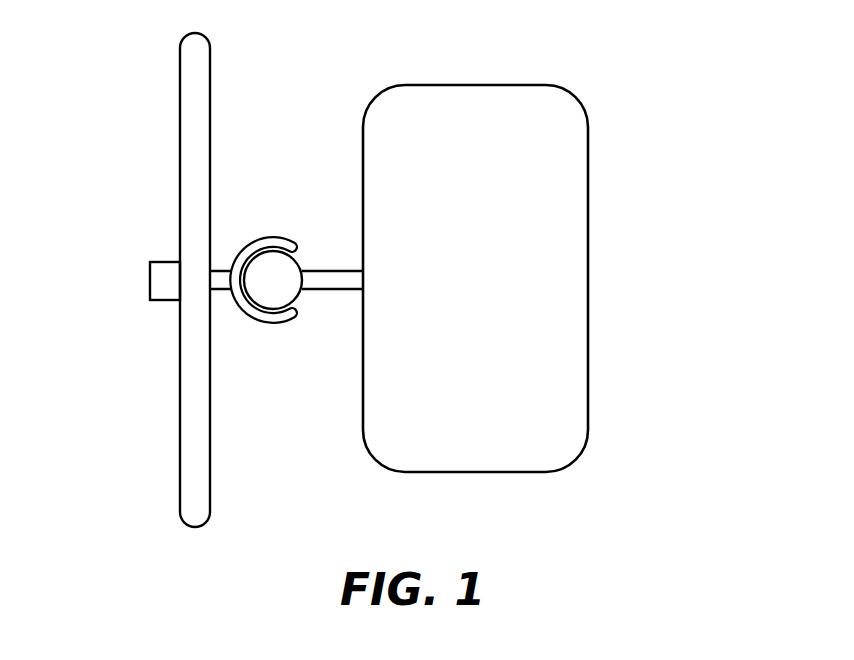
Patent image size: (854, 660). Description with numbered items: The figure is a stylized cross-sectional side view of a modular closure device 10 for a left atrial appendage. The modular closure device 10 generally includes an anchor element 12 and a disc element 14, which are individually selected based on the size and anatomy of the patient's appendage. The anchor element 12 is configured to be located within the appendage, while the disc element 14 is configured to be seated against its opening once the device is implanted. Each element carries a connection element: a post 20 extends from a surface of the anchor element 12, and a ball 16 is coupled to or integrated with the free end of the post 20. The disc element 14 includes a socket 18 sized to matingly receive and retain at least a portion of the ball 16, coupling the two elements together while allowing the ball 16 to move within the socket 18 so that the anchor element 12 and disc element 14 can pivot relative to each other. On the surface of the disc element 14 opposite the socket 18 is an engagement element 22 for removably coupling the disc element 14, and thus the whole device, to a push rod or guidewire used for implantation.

The modular closure device 10 is at (562, 48).
The anchor element 12 is at (589, 155).
The disc element 14 is at (180, 87).
The ball 16 is at (274, 283).
The socket 18 is at (254, 240).
The post 20 is at (337, 268).
The engagement element 22 is at (150, 277).